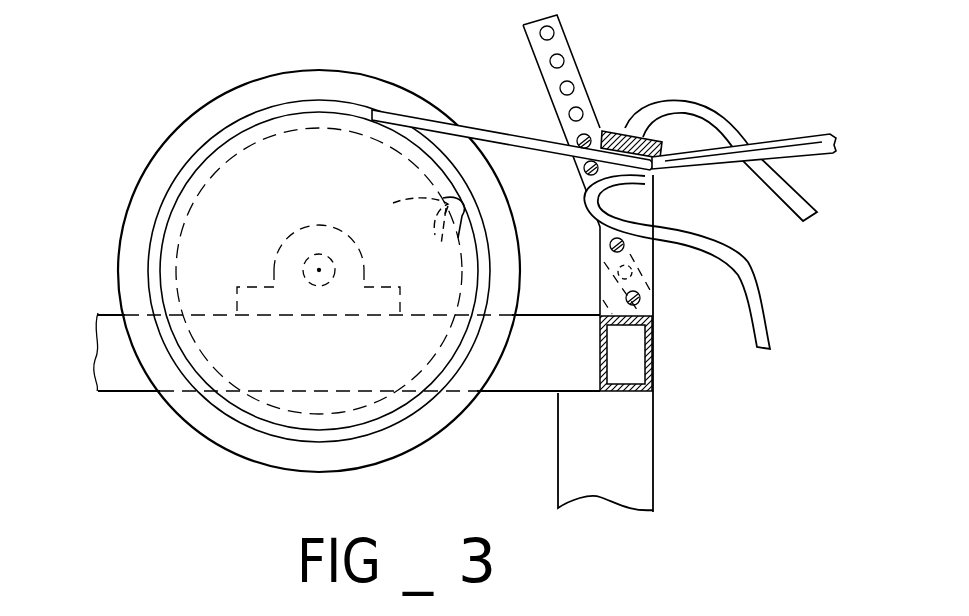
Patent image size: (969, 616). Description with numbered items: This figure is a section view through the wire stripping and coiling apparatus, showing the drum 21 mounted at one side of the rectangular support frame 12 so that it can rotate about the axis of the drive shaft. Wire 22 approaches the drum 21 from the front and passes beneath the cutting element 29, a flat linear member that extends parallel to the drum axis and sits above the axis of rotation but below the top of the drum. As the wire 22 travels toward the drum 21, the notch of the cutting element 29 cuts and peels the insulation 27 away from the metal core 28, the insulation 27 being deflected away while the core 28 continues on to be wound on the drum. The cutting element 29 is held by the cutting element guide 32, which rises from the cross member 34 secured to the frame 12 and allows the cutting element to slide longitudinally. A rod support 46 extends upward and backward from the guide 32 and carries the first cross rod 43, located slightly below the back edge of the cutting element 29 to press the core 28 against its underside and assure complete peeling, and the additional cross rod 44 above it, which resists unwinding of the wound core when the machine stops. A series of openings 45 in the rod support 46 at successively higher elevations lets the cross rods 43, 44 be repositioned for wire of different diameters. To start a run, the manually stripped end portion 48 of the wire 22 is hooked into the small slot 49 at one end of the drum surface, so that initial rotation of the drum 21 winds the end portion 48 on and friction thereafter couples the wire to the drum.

The support frame 12 is at (656, 465).
The drum 21 is at (208, 100).
The wire 22 is at (781, 134).
The insulation 27 is at (773, 330).
The metal core 28 is at (490, 127).
The cutting element 29 is at (641, 142).
The first cutting element guide 32 is at (660, 215).
The cross member 34 is at (597, 344).
The first cross rod 43 is at (589, 174).
The additional cross rod 44 is at (589, 136).
The openings 45 is at (554, 59).
The rod support 46 is at (568, 43).
The end portion 48 is at (480, 210).
The slot 49 is at (407, 221).